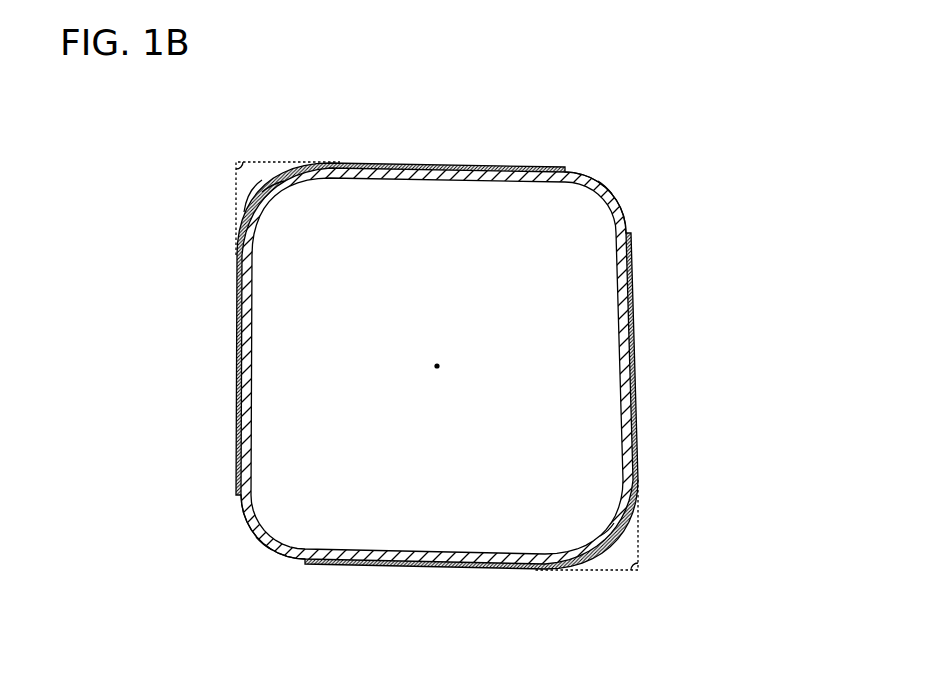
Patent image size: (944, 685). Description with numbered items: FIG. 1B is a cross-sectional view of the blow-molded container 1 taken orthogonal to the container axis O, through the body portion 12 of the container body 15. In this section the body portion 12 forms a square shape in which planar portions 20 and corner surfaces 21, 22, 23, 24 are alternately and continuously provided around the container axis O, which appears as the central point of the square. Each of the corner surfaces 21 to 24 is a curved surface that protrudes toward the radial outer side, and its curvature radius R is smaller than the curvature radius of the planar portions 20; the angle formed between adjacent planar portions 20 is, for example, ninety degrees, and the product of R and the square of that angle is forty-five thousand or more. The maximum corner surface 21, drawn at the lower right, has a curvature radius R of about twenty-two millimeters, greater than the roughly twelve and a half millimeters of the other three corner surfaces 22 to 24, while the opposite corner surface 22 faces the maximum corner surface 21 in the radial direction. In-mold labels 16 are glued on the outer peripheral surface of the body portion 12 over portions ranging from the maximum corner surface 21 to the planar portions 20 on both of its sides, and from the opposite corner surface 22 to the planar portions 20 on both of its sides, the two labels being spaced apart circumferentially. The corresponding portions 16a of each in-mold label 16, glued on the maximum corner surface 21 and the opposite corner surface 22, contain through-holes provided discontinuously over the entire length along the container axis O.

The blow-molded container 1 is at (725, 141).
The body portion 12 is at (361, 366).
The container body 15 is at (228, 274).
The in-mold label 16 is at (229, 421).
The corresponding portion 16a is at (246, 177).
The planar portion 20 is at (427, 166).
The maximum corner surface 21 is at (594, 538).
The opposite corner surface 22 is at (270, 180).
The corner surface 23 is at (262, 543).
The corner surface 24 is at (612, 188).
The container axis O is at (440, 363).
The curvature radius R is at (280, 205).